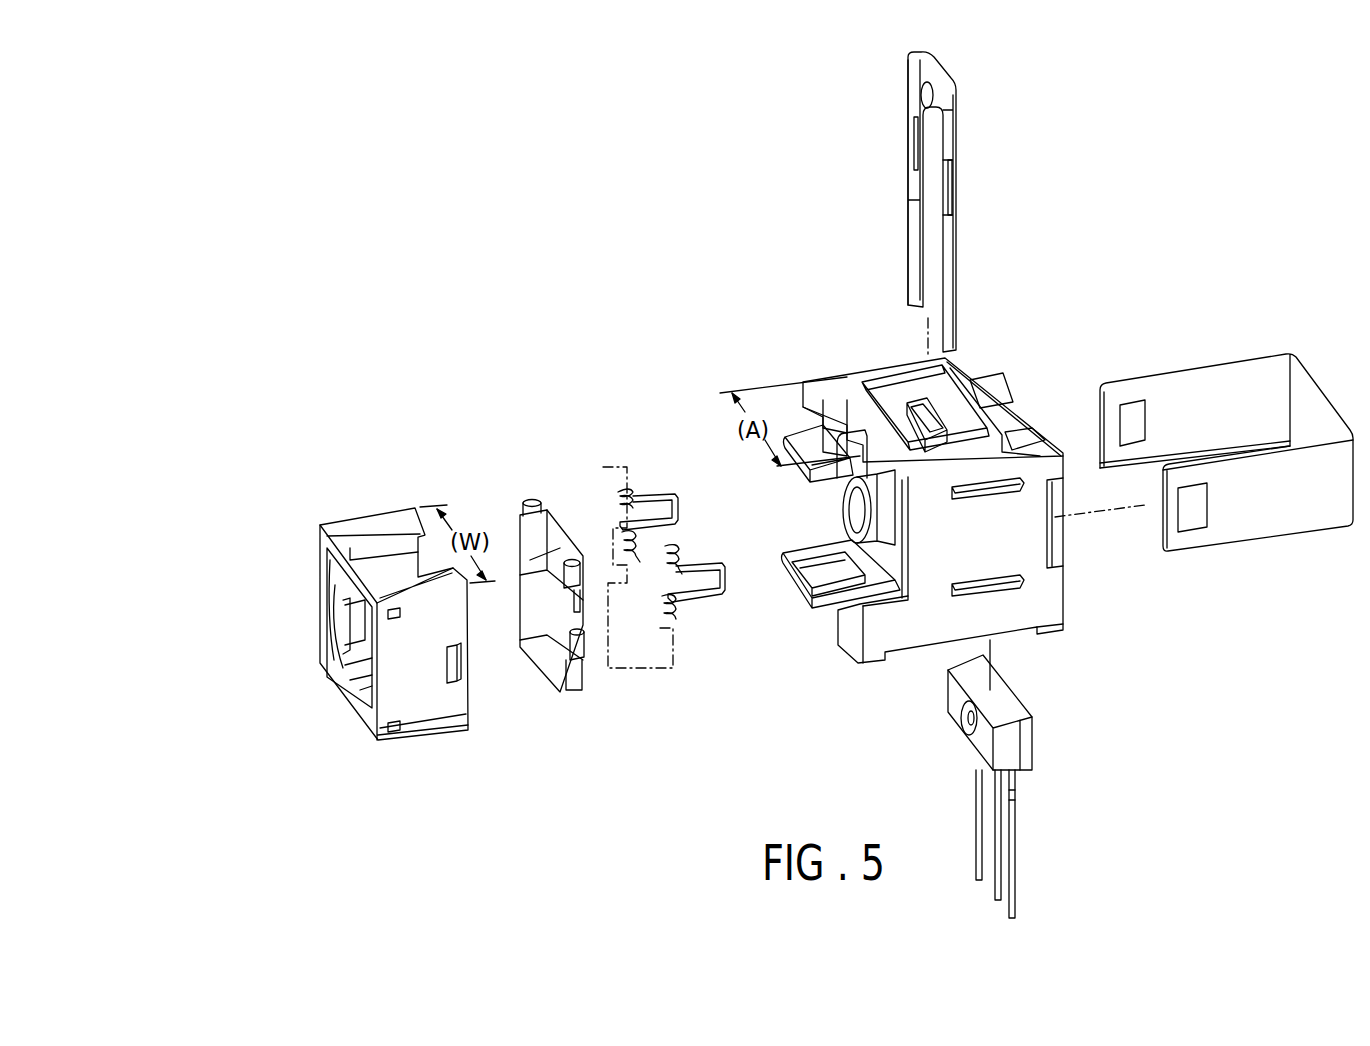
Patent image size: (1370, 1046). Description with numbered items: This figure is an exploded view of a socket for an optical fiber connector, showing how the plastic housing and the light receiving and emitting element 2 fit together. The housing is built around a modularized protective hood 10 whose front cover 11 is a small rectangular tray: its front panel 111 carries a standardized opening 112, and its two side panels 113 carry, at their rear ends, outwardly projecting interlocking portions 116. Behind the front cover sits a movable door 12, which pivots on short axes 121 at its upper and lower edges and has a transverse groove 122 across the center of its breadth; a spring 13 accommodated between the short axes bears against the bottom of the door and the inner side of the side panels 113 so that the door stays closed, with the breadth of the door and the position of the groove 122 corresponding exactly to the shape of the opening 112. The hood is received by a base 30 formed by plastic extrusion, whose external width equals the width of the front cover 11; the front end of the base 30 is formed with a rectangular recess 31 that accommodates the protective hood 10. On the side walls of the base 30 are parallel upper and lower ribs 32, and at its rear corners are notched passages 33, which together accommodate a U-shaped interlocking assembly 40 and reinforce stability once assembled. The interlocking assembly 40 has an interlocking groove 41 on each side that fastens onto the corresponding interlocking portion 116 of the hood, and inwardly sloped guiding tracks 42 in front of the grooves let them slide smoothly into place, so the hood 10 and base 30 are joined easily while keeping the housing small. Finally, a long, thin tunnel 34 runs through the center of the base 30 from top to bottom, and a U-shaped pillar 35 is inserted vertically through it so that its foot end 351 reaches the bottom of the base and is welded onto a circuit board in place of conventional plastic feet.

The light receiving and emitting element 2 is at (1014, 835).
The protective hood 10 is at (660, 453).
The front cover 11 is at (318, 580).
The front panel 111 is at (327, 658).
The opening 112 is at (357, 618).
The side panels 113 is at (425, 713).
The interlocking portion 116 is at (463, 663).
The movable door 12 is at (587, 642).
The short axis 121 is at (577, 678).
The groove 122 is at (567, 620).
The spring 13 is at (692, 612).
The base 30 is at (993, 367).
The rectangular recess 31 is at (827, 507).
The ribs 32 is at (990, 590).
The notched passage 33 is at (1057, 532).
The tunnel 34 is at (927, 363).
The U-shaped pillar 35 is at (950, 190).
The foot end 351 is at (912, 303).
The U-shaped interlocking assembly 40 is at (1317, 388).
The interlocking groove 41 is at (1193, 505).
The guiding track 42 is at (1103, 428).